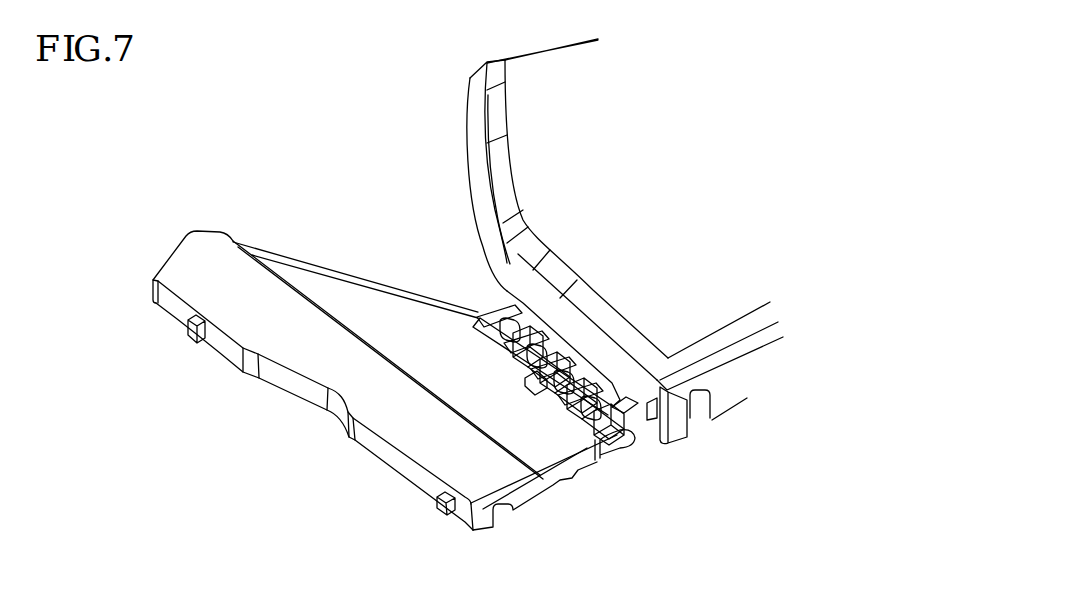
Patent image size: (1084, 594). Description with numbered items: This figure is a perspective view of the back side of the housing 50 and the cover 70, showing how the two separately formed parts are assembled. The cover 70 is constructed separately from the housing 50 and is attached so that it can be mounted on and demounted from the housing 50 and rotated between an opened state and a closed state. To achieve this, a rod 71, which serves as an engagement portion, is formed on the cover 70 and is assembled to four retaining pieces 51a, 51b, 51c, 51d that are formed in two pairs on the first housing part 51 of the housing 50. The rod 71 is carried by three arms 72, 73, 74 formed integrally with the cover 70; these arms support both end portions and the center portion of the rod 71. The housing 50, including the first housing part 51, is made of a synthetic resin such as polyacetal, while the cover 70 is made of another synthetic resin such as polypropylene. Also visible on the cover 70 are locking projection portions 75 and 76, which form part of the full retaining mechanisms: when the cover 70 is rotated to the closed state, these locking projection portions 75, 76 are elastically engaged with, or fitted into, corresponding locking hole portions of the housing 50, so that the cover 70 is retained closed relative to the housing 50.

The housing 50 is at (468, 150).
The first housing part 51 is at (530, 207).
The retaining piece 51a is at (581, 430).
The retaining piece 51b is at (547, 402).
The retaining piece 51c is at (533, 372).
The retaining piece 51d is at (505, 344).
The cover 70 is at (183, 247).
The rod 71 is at (610, 407).
The arm 72 is at (630, 446).
The arm 73 is at (538, 380).
The arm 74 is at (473, 327).
The locking projection portion 75 is at (440, 505).
The locking projection portion 76 is at (188, 331).